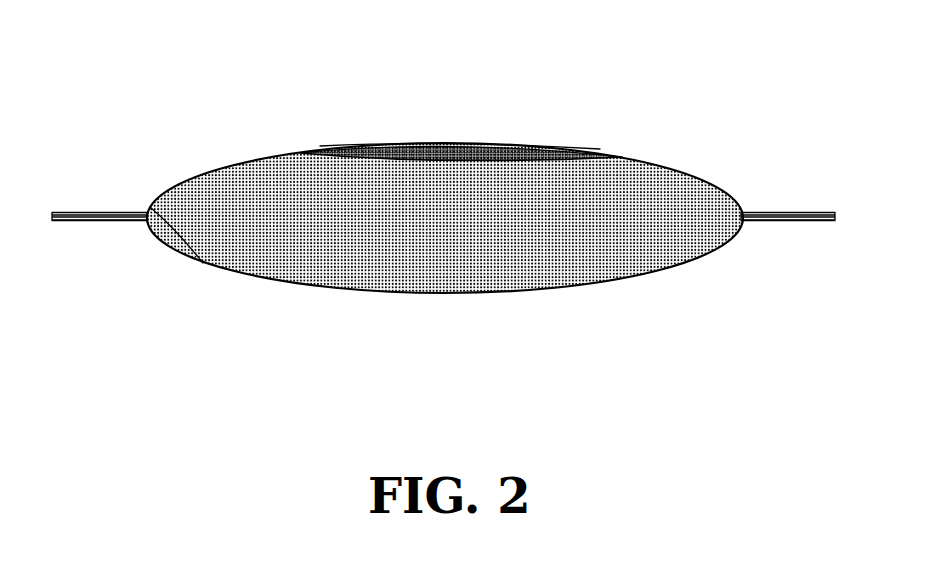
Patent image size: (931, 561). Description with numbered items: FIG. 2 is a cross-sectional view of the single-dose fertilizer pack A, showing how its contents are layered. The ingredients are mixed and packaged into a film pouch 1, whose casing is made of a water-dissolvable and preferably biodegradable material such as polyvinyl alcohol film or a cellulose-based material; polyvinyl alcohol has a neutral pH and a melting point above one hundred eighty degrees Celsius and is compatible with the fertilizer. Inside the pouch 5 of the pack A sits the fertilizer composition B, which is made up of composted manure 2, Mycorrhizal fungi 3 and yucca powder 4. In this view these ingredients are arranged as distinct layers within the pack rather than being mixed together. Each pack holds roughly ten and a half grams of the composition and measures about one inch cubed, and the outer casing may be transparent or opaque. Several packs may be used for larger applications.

The fertilizer pack A is at (165, 66).
The film pouch 1 is at (769, 212).
The composted manure 2 is at (427, 240).
The Mycorrhizal fungi 3 is at (307, 152).
The yucca powder 4 is at (432, 143).
The pouch 5 is at (203, 265).
The fertilizer composition B is at (490, 142).